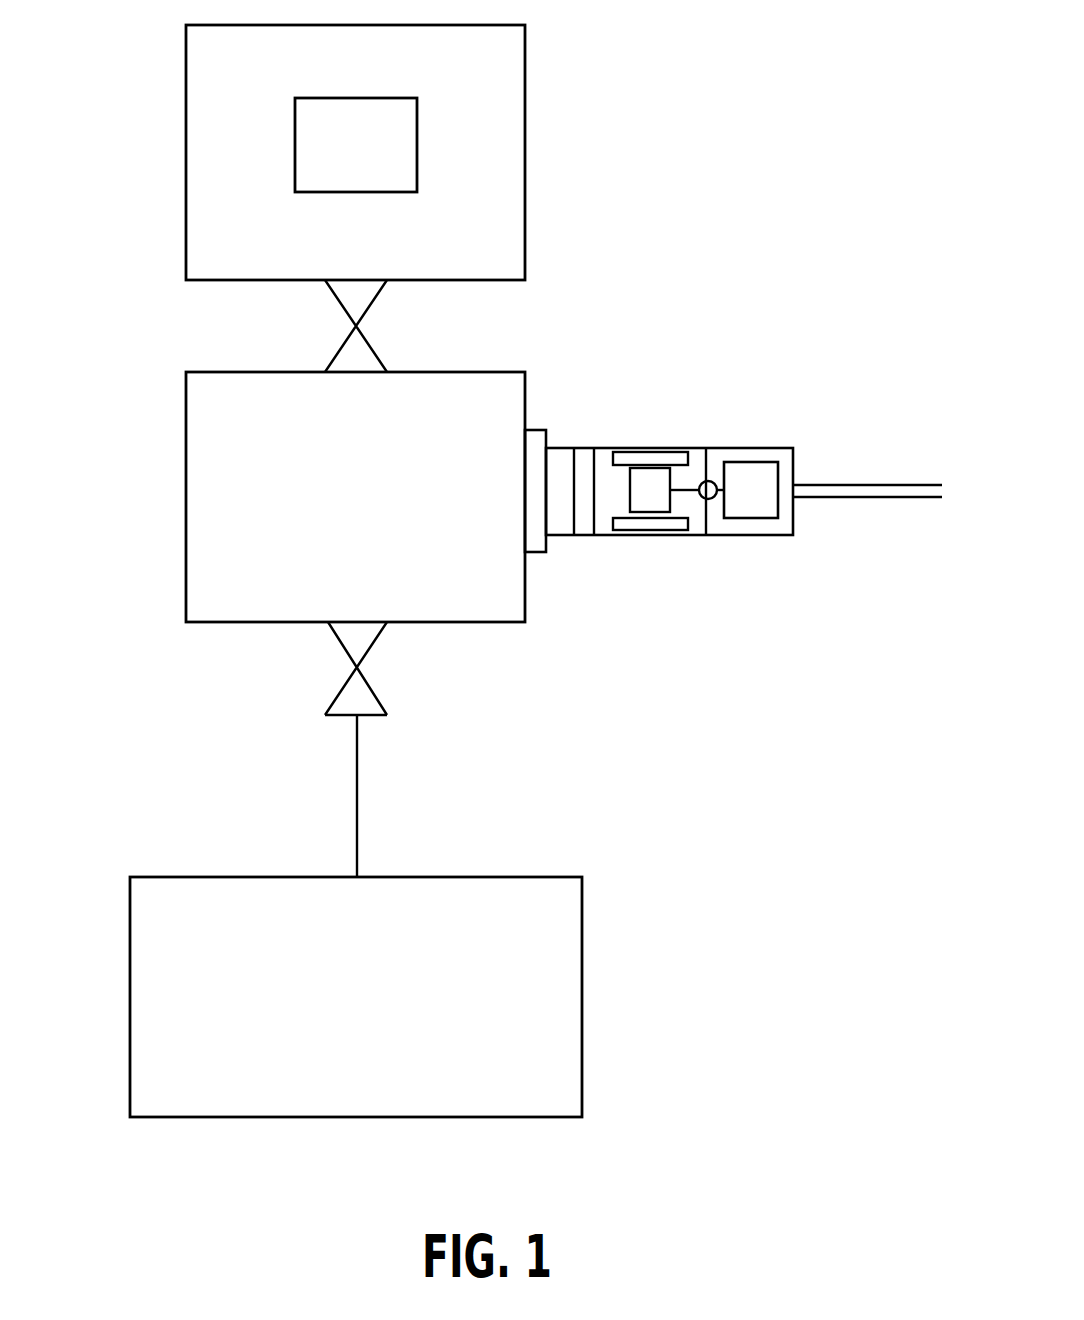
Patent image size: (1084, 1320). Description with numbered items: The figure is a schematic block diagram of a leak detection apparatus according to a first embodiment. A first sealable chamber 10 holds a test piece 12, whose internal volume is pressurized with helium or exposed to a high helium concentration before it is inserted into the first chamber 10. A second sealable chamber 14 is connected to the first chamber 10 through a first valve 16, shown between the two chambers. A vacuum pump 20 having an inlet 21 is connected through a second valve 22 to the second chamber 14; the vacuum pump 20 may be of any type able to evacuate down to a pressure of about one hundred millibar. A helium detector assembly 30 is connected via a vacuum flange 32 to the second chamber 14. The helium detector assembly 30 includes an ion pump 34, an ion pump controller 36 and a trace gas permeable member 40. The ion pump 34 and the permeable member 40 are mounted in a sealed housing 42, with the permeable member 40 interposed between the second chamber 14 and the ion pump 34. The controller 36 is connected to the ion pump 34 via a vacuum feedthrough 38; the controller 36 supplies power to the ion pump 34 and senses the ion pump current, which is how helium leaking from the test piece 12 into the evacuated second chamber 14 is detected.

The first sealable chamber 10 is at (185, 118).
The test piece 12 is at (295, 170).
The second sealable chamber 14 is at (438, 622).
The first valve 16 is at (372, 303).
The vacuum pump 20 is at (598, 970).
The inlet 21 is at (372, 813).
The second valve 22 is at (335, 640).
The helium detector assembly 30 is at (610, 551).
The vacuum flange 32 is at (540, 569).
The ion pump 34 is at (663, 461).
The ion pump controller 36 is at (765, 535).
The vacuum feedthrough 38 is at (709, 500).
The trace gas permeable member 40 is at (596, 436).
The sealed housing 42 is at (630, 450).